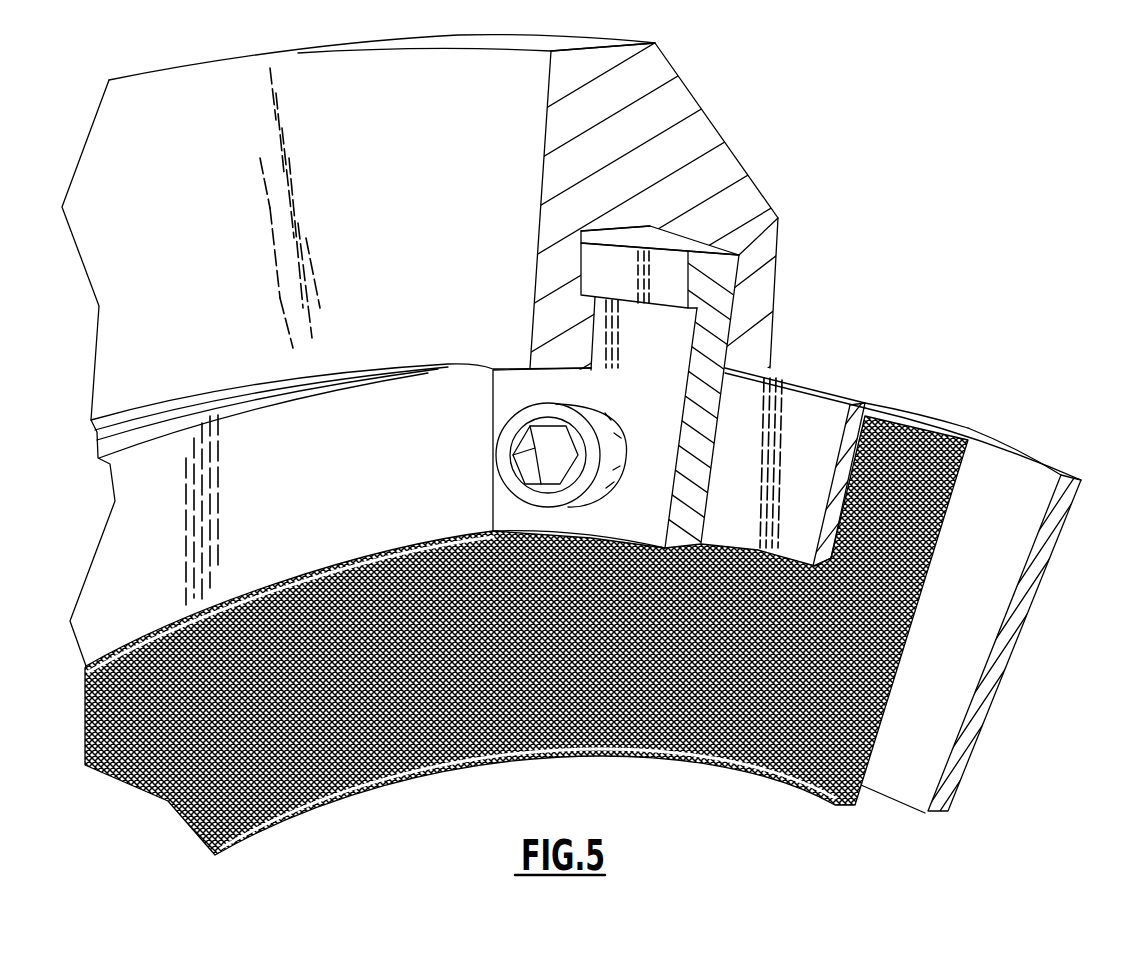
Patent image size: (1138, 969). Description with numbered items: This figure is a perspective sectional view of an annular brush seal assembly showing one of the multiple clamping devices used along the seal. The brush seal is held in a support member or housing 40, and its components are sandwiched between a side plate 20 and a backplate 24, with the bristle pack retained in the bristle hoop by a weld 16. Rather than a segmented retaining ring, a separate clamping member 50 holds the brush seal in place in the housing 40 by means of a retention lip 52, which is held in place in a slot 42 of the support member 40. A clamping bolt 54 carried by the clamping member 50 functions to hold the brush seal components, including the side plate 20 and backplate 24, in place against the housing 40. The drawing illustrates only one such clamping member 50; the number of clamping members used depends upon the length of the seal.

The weld 16 is at (960, 430).
The side plate 20 is at (818, 407).
The backplate 24 is at (1050, 463).
The support member 40 is at (723, 143).
The slot 42 is at (618, 222).
The clamping member 50 is at (503, 380).
The retention lip 52 is at (592, 260).
The clamping bolt 54 is at (608, 428).